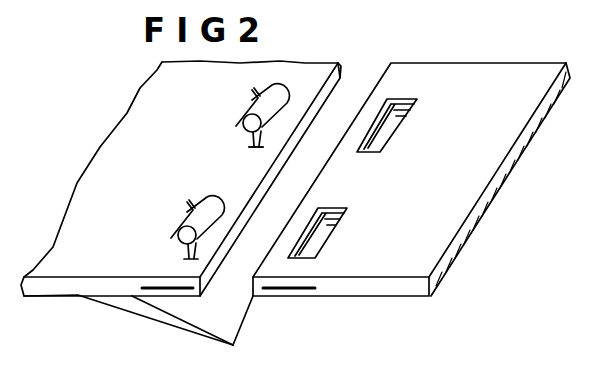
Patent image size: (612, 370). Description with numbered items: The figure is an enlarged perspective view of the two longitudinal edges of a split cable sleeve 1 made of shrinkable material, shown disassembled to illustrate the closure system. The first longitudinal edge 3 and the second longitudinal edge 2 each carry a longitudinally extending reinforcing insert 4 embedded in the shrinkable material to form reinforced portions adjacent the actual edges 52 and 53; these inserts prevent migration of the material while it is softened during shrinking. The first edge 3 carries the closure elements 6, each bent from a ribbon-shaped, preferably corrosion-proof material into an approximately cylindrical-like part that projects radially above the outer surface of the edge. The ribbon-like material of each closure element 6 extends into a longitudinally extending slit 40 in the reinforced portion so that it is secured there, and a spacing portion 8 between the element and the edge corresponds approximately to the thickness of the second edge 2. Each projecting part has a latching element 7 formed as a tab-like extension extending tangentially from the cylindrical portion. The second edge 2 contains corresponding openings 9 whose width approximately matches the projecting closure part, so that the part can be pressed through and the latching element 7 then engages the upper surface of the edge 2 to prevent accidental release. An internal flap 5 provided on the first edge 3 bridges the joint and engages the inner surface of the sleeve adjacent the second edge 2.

The cable sleeve 1 is at (465, 222).
The second longitudinal edge 2 is at (439, 68).
The first longitudinal edge 3 is at (305, 70).
The reinforcing insert 4 is at (158, 294).
The internal flap 5 is at (186, 323).
The closure element 6 is at (243, 133).
The latching element 7 is at (240, 124).
The spacing portion 8 is at (262, 146).
The opening 9 is at (395, 122).
The longitudinally extending slit 40 is at (256, 147).
The actual edge 52 is at (255, 285).
The actual edge 53 is at (338, 74).